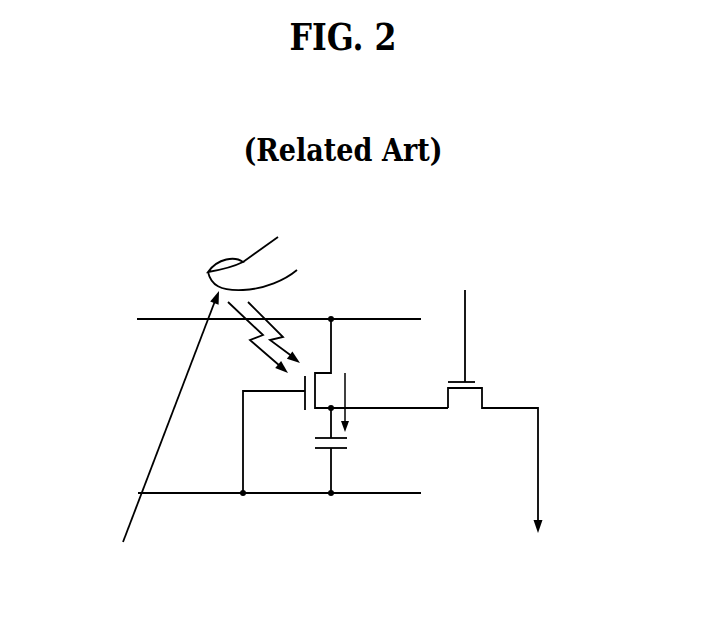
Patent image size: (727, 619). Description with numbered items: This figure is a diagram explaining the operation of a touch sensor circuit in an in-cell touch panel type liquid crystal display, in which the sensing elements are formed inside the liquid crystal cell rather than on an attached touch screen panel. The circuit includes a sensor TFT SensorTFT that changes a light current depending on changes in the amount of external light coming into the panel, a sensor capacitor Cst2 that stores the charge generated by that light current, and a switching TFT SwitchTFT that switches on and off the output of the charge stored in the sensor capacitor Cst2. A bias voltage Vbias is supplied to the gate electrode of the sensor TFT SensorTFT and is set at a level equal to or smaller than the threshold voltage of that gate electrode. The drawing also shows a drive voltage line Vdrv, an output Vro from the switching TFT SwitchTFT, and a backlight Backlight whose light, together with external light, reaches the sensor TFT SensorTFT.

The drive voltage line Vdrv is at (248, 319).
The bias voltage Vbias is at (243, 492).
The sensor TFT SensorTFT is at (345, 404).
The sensor capacitor Cst2 is at (360, 450).
The switching TFT SwitchTFT is at (532, 411).
The readout voltage output Vro is at (542, 551).
The backlight Backlight is at (142, 435).